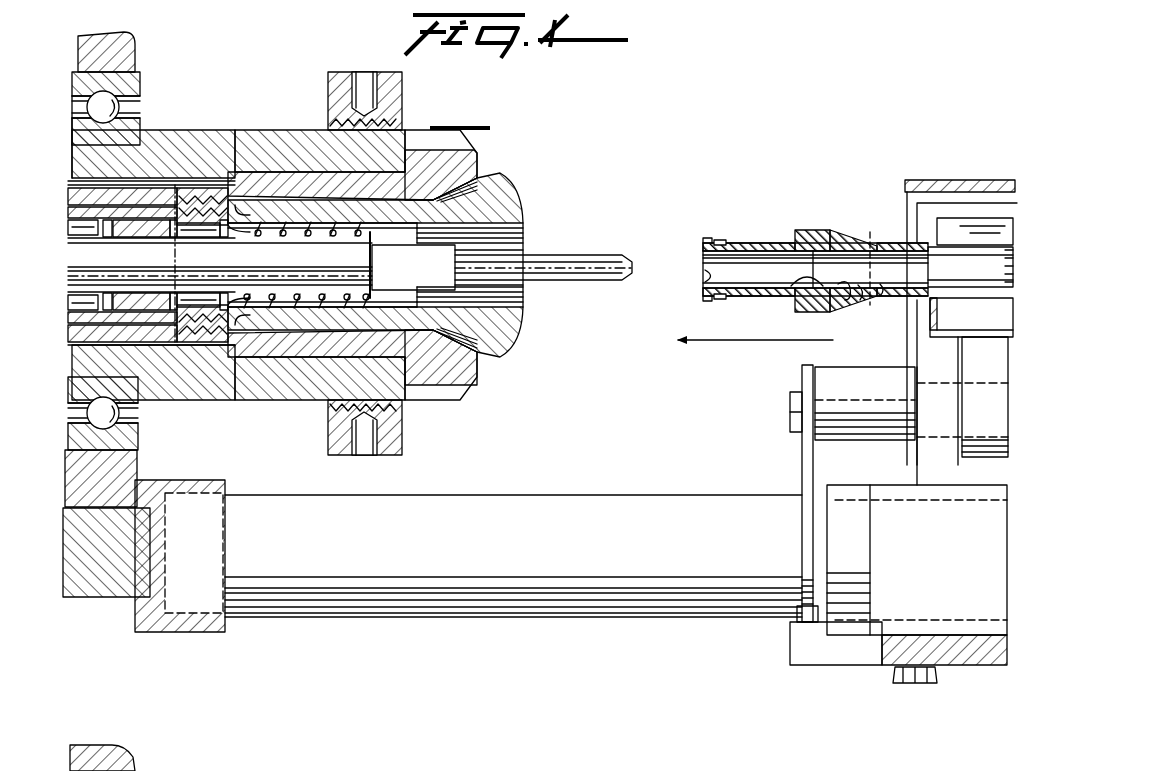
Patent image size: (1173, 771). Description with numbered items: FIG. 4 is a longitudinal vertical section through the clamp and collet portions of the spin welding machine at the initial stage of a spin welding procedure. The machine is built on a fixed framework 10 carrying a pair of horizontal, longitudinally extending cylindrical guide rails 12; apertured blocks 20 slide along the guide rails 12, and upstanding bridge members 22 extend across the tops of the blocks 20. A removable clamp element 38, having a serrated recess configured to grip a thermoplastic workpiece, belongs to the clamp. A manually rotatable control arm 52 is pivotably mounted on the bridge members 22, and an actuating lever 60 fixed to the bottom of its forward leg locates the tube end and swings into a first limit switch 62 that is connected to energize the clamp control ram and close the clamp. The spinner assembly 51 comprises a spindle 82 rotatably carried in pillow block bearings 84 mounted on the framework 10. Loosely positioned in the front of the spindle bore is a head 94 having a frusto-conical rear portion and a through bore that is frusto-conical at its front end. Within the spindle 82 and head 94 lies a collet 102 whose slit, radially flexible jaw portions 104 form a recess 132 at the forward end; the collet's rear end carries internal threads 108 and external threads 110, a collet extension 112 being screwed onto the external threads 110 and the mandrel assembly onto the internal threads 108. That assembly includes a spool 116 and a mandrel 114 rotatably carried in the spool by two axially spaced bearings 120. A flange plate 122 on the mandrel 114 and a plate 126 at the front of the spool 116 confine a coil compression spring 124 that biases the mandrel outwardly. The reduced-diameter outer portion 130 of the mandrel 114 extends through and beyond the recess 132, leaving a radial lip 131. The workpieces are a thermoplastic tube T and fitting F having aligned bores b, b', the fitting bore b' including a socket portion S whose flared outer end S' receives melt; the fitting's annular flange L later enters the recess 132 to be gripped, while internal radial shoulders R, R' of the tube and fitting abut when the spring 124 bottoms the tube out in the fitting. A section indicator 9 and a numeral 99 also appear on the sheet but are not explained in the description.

The fixed framework 10 is at (180, 636).
The cylindrical guide rails 12 is at (335, 612).
The apertured blocks 20 is at (890, 575).
The bridge members 22 is at (920, 458).
The clamp element 38 is at (955, 225).
The spinner assembly 51 is at (345, 62).
The control arm 52 is at (950, 170).
The actuating lever 60 is at (800, 462).
The first limit switch 62 is at (800, 662).
The spindle 82 is at (200, 135).
The pillow block bearings 84 is at (132, 42).
The head 94 is at (480, 152).
The element 99 is at (400, 770).
The collet 102 is at (522, 185).
The jaw portions 104 is at (508, 208).
The internal threads 108 is at (207, 310).
The external threads 110 is at (192, 202).
The collet extension 112 is at (145, 192).
The mandrel 114 is at (560, 258).
The spool 116 is at (140, 308).
The bearings 120 is at (117, 182).
The flange plate 122 is at (467, 388).
The coil compression spring 124 is at (393, 353).
The plate 126 is at (240, 323).
The outer portion of the mandrel 130 is at (540, 275).
The radial lip 131 is at (465, 275).
The recess 132 is at (510, 232).
The section line 9 is at (598, 78).
The thermoplastic fitting F is at (775, 242).
The internal radial shoulder of the tube R is at (795, 218).
The annular flange L is at (818, 230).
The thermoplastic tube T is at (882, 242).
The bore of the tube b is at (884, 305).
The bore of the fitting b' is at (678, 292).
The internal radial shoulder of the fitting R' is at (780, 305).
The socket portion S is at (844, 326).
The outer end of the socket S' is at (871, 322).